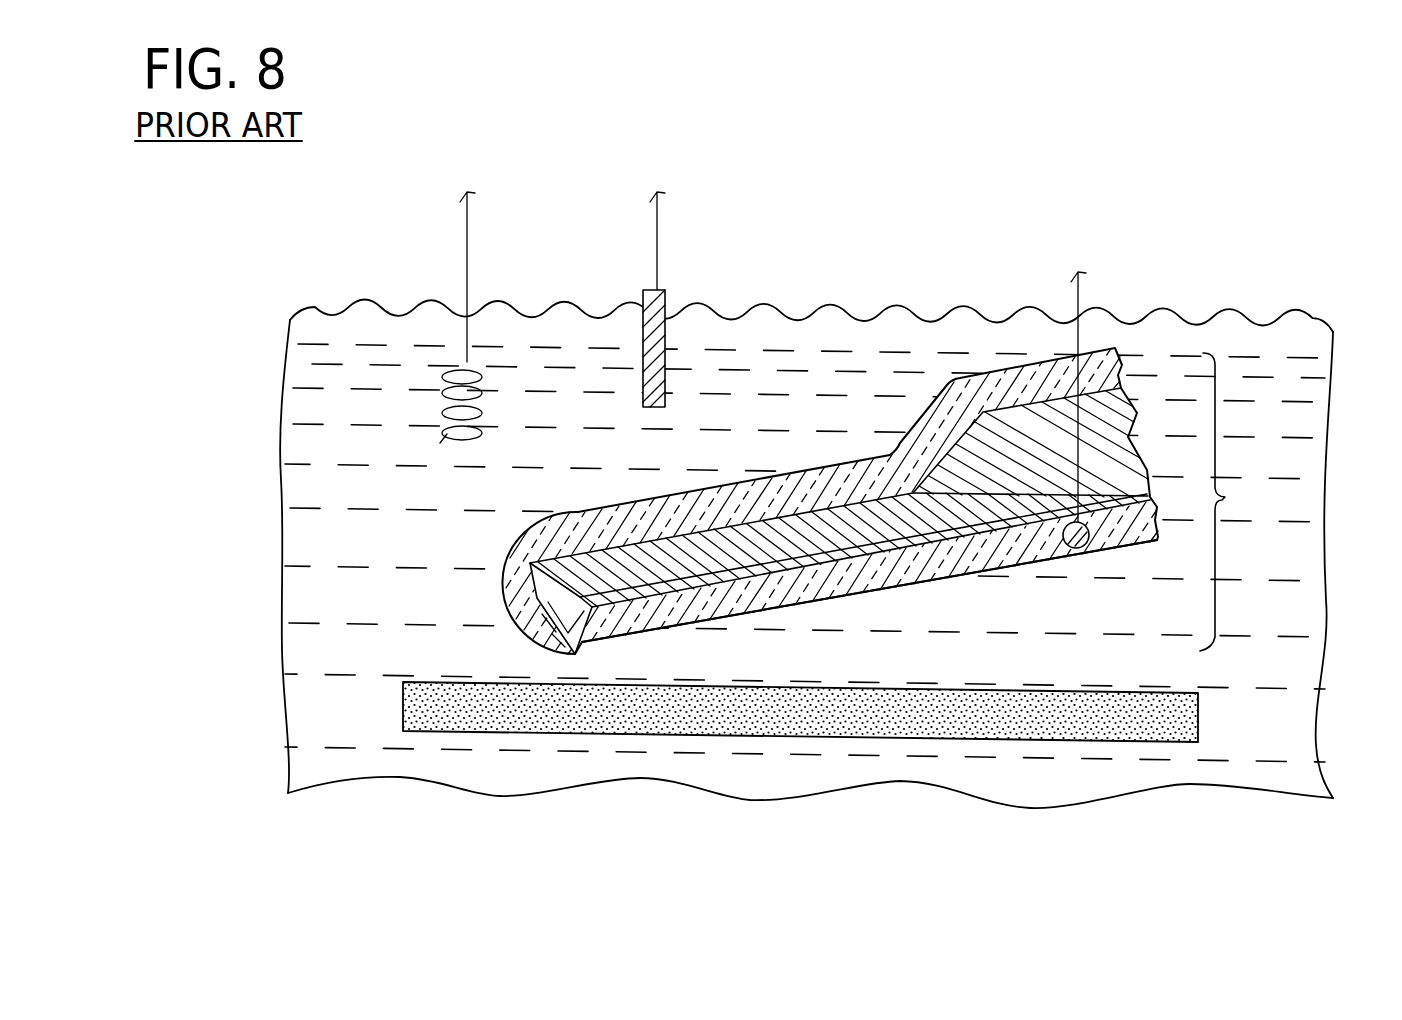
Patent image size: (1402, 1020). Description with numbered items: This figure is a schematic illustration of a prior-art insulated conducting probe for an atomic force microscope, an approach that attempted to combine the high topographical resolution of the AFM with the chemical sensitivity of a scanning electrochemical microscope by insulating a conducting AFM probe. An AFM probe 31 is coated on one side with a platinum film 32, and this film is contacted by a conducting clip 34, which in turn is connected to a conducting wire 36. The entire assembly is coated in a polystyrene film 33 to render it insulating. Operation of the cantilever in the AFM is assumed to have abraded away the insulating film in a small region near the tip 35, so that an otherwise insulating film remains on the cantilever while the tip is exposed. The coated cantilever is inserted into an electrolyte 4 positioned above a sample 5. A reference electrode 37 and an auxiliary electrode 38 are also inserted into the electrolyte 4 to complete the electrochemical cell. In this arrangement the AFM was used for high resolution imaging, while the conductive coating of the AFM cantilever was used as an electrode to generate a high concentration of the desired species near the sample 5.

The electrolyte 4 is at (1225, 497).
The sample 5 is at (878, 718).
The AFM probe 31 is at (782, 537).
The platinum film 32 is at (846, 558).
The polystyrene film 33 is at (950, 560).
The conducting clip 34 is at (1083, 550).
The tip 35 is at (576, 656).
The conducting wire 36 is at (1078, 300).
The reference electrode 37 is at (662, 298).
The auxiliary electrode 38 is at (467, 268).